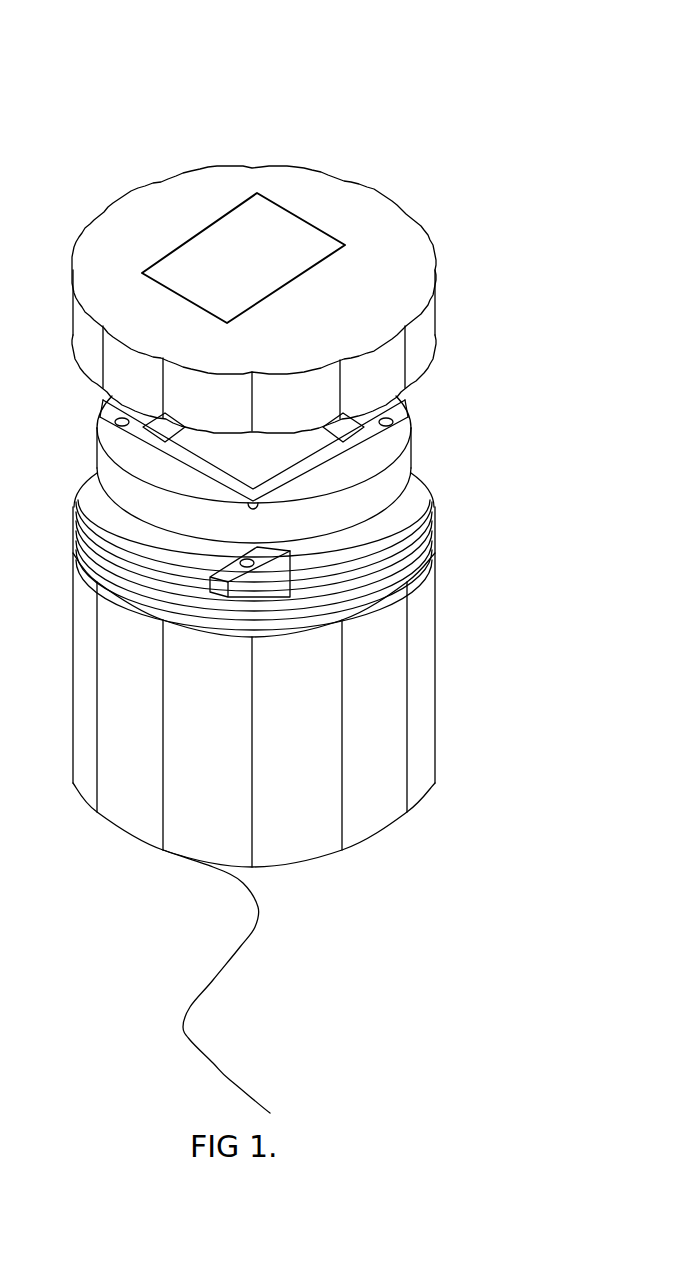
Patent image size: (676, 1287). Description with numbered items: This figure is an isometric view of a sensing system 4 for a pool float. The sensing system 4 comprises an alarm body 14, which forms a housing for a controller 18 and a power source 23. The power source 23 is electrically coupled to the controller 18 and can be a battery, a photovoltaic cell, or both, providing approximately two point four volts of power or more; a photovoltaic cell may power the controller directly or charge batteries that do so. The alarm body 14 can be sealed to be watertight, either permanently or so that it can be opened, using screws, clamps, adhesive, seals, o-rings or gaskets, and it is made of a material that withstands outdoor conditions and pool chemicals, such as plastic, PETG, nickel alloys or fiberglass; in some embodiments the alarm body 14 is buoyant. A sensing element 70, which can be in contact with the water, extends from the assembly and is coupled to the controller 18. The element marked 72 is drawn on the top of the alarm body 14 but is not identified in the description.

The sensing system 4 is at (281, 98).
The alarm body 14 is at (415, 248).
The window 72 is at (290, 237).
The controller 18 is at (352, 432).
The power source 23 is at (362, 525).
The sensing element 70 is at (230, 1080).